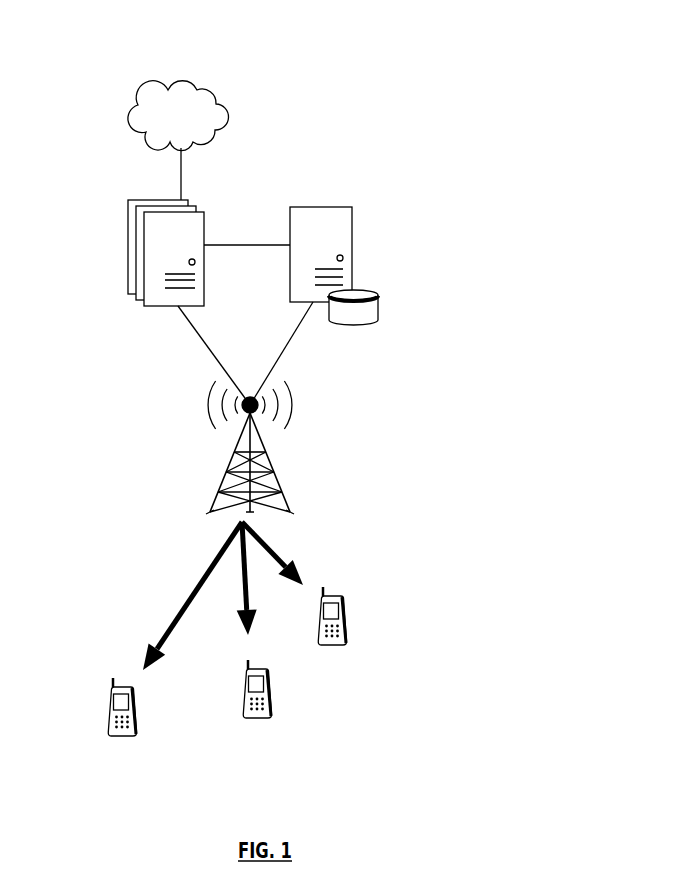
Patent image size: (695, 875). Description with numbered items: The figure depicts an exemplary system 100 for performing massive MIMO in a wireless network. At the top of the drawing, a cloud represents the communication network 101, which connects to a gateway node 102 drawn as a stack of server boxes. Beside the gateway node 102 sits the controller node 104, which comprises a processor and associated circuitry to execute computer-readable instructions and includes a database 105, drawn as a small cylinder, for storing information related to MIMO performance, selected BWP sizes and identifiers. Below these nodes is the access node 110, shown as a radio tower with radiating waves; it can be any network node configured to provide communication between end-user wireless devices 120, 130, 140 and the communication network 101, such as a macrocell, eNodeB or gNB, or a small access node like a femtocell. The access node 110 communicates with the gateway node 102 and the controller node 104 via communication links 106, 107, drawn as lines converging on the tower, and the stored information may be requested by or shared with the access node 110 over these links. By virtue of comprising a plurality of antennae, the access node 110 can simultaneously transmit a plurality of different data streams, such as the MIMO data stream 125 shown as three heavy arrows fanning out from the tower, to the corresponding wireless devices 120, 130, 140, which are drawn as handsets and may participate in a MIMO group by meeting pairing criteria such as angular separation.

The system 100 is at (367, 62).
The communication network 101 is at (197, 125).
The gateway node 102 is at (148, 199).
The controller node 104 is at (353, 205).
The database 105 is at (379, 289).
The communication link 106 is at (287, 339).
The communication link 107 is at (193, 332).
The access node 110 is at (224, 480).
The wireless device 120 is at (108, 725).
The MIMO data stream 125 is at (201, 556).
The wireless device 130 is at (243, 705).
The wireless device 140 is at (348, 603).